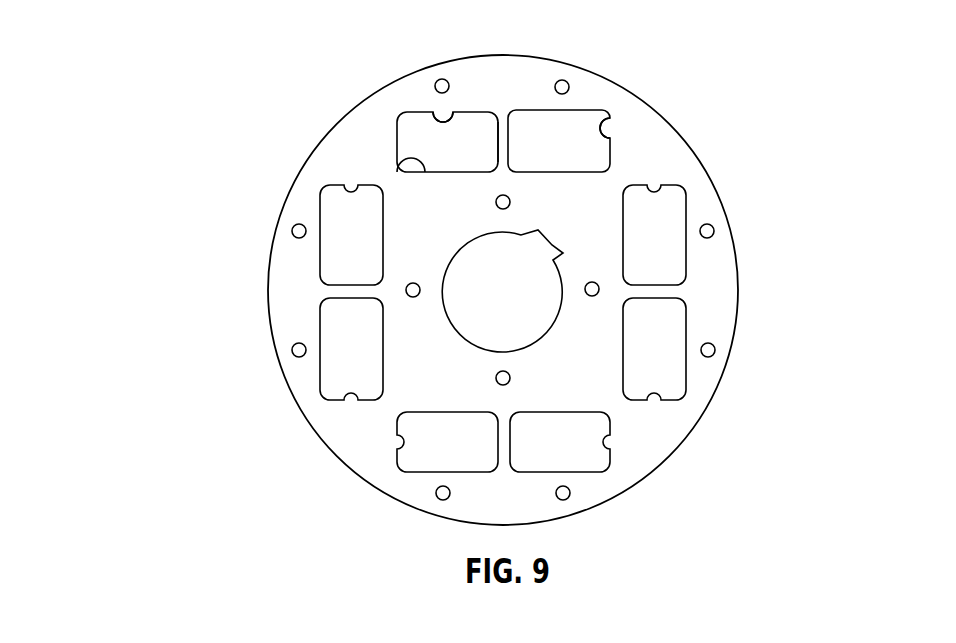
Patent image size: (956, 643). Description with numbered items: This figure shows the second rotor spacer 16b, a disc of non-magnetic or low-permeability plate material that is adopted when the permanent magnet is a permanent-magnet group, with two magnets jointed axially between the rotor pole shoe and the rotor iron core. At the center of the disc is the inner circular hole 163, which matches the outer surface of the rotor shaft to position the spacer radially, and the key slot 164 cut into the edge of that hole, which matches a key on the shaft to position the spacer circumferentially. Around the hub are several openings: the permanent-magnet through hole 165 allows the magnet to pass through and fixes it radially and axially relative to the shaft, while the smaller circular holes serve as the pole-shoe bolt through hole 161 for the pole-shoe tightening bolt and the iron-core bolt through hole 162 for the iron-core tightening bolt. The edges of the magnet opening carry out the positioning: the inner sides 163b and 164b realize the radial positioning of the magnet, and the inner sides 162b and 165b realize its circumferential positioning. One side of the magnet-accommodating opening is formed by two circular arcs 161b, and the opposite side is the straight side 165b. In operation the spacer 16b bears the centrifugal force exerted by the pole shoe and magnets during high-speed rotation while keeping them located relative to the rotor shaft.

The second rotor spacer 16b is at (232, 72).
The pole-shoe bolt through hole 161 is at (715, 352).
The iron-core bolt through hole 162 is at (599, 288).
The center circular hole 163 is at (547, 333).
The key slot 164 is at (552, 245).
The permanent-magnet through hole 165 is at (540, 135).
The circular arcs 161b is at (398, 128).
The inner side 162b is at (608, 117).
The inner side 163b is at (407, 160).
The inner side 164b is at (437, 118).
The straight side 165b is at (493, 141).